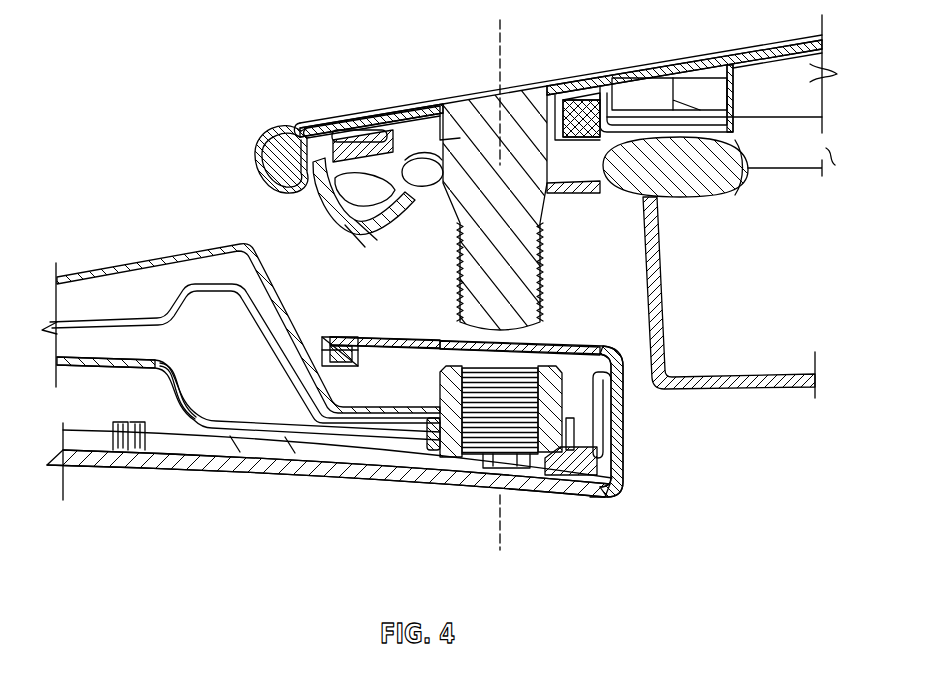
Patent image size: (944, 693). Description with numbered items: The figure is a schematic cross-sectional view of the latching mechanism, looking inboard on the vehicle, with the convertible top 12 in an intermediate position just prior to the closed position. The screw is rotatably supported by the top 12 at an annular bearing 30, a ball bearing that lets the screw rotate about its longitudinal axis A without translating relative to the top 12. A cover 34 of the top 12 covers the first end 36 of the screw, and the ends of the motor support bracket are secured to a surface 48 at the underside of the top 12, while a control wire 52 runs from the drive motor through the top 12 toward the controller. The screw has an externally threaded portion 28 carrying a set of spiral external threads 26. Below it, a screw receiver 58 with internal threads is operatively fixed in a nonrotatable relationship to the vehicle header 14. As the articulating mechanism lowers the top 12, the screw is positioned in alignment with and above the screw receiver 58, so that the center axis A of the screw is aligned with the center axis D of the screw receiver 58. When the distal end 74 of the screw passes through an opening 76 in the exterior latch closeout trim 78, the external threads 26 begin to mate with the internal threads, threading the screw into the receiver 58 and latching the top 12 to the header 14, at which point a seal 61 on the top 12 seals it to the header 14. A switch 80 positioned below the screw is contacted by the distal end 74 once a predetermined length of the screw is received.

The convertible top 12 is at (735, 50).
The vehicle header 14 is at (150, 260).
The external threads 26 is at (458, 265).
The externally threaded portion 28 is at (522, 278).
The annular bearing 30 is at (570, 108).
The cover 34 is at (473, 88).
The first end 36 is at (570, 98).
The surface 48 is at (727, 143).
The control wire 52 is at (763, 167).
The screw receiver 58 is at (550, 400).
The seal 61 is at (260, 138).
The distal end 74 is at (528, 338).
The opening 76 is at (437, 338).
The exterior latch closeout trim 78 is at (352, 346).
The switch 80 is at (437, 343).
The longitudinal axis A is at (497, 42).
The center axis D is at (505, 500).